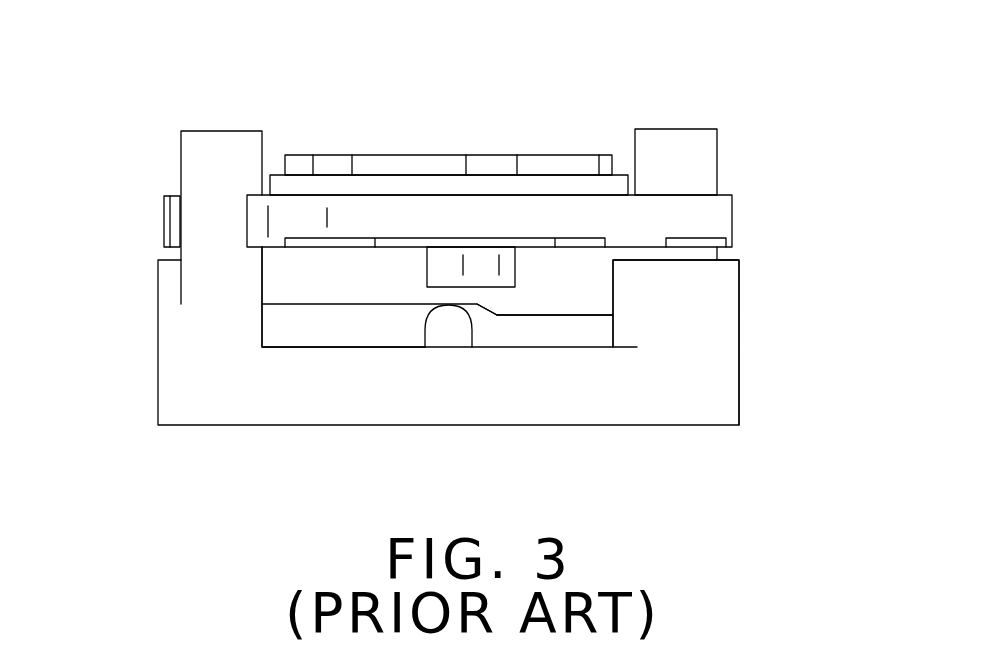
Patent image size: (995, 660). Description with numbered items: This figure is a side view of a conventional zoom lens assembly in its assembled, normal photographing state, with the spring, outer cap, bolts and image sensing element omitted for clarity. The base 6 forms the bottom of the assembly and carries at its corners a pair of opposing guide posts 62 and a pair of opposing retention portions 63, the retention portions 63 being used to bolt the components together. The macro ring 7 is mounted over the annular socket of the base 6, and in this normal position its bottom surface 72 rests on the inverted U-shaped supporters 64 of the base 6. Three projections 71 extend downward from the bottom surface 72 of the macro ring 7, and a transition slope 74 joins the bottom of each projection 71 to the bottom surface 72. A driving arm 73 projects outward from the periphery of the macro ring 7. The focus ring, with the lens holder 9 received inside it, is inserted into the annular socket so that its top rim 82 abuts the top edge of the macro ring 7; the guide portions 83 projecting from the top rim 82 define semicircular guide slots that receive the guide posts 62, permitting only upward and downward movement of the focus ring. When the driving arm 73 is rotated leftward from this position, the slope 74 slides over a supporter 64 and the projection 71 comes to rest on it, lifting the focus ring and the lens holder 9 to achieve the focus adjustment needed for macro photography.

The base 6 is at (698, 398).
The guide posts 62 is at (197, 163).
The retention portions 63 is at (697, 287).
The inverted U-shaped supporters 64 is at (447, 333).
The macro ring 7 is at (283, 272).
The projections 71 is at (565, 315).
The bottom surface 72 is at (313, 305).
The driving arm 73 is at (443, 270).
The transition slope 74 is at (490, 312).
The top rim 82 is at (690, 203).
The guide portions 83 is at (165, 218).
The lens holder 9 is at (552, 156).